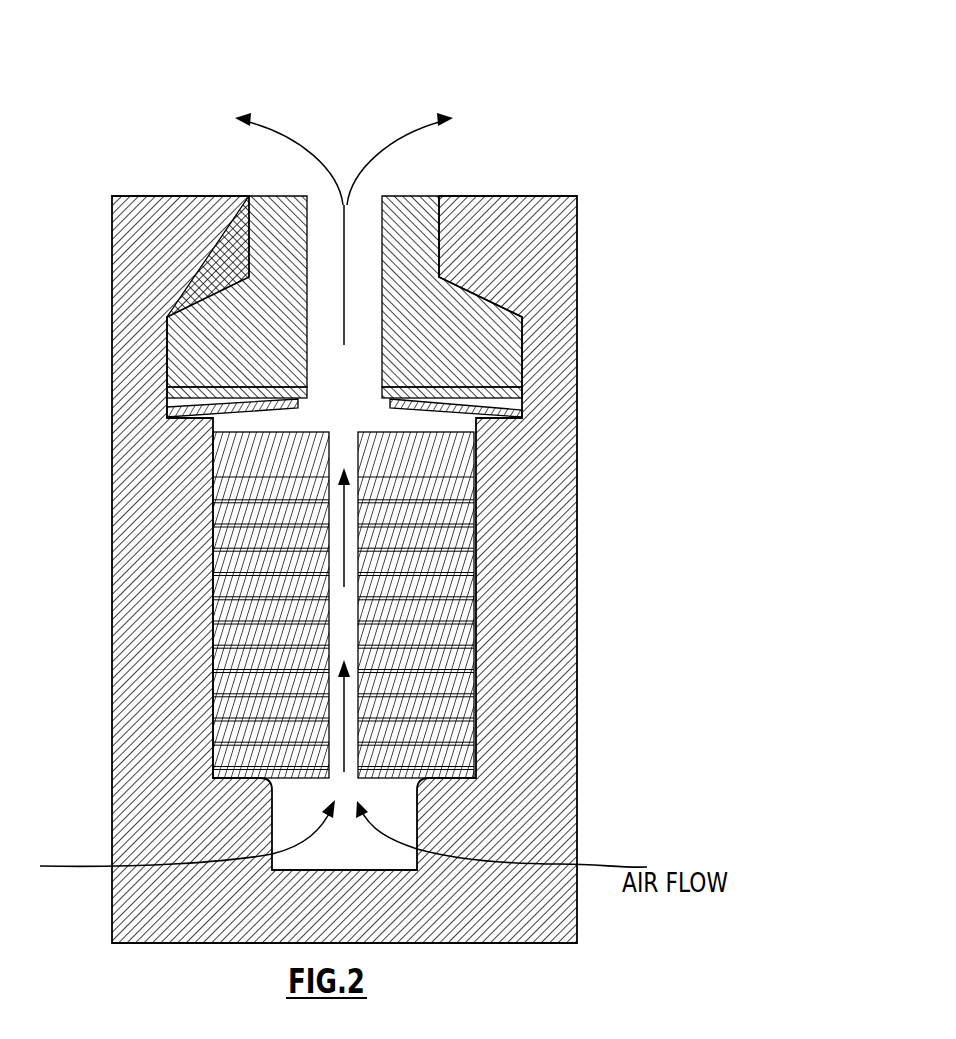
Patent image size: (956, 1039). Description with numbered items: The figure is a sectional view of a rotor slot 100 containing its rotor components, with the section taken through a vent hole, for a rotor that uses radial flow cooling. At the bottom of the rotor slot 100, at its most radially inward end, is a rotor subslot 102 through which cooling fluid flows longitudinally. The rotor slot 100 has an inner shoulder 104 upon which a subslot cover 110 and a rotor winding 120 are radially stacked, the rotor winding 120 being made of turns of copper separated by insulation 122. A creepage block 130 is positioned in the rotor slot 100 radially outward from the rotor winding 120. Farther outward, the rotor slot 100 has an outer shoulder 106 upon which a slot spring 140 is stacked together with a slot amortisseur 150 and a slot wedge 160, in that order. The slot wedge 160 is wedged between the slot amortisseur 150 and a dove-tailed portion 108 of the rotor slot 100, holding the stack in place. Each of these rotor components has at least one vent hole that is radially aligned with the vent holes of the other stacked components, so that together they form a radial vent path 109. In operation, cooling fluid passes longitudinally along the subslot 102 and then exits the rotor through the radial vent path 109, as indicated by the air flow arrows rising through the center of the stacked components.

The rotor slot 100 is at (270, 86).
The rotor subslot 102 is at (407, 822).
The inner shoulder 104 is at (250, 796).
The outer shoulder 106 is at (198, 418).
The dove-tailed portion 108 is at (227, 235).
The radial vent path 109 is at (345, 800).
The subslot cover 110 is at (477, 772).
The rotor winding 120 is at (462, 708).
The insulation 122 is at (517, 672).
The creepage block 130 is at (443, 455).
The slot spring 140 is at (520, 412).
The slot amortisseur 150 is at (513, 393).
The slot wedge 160 is at (502, 333).